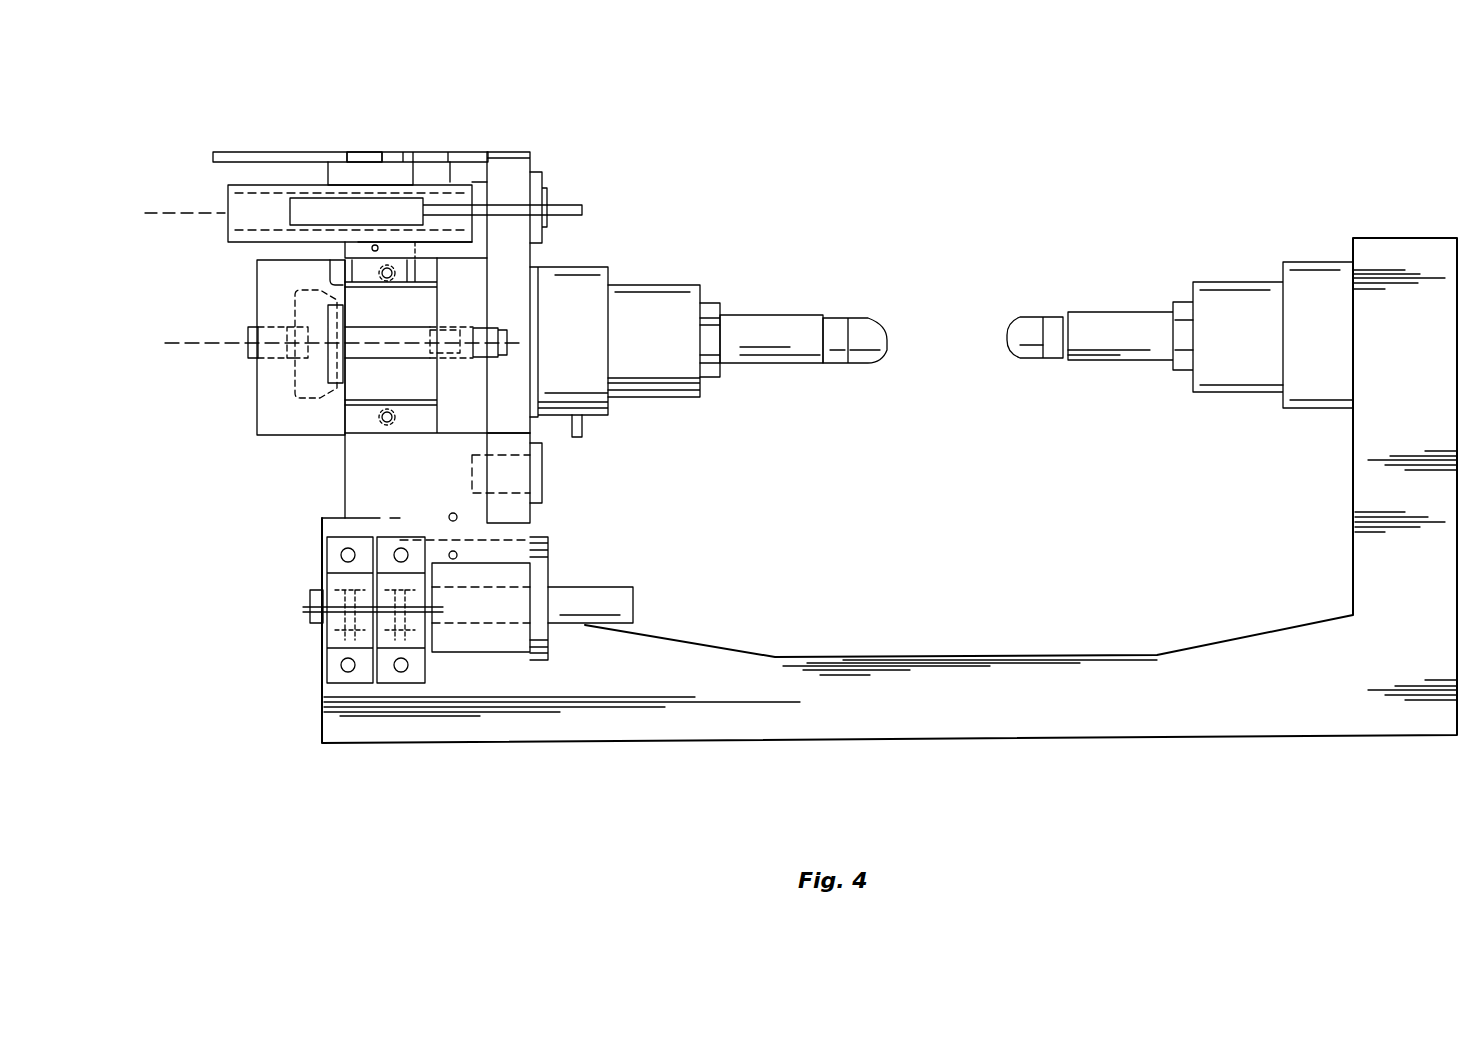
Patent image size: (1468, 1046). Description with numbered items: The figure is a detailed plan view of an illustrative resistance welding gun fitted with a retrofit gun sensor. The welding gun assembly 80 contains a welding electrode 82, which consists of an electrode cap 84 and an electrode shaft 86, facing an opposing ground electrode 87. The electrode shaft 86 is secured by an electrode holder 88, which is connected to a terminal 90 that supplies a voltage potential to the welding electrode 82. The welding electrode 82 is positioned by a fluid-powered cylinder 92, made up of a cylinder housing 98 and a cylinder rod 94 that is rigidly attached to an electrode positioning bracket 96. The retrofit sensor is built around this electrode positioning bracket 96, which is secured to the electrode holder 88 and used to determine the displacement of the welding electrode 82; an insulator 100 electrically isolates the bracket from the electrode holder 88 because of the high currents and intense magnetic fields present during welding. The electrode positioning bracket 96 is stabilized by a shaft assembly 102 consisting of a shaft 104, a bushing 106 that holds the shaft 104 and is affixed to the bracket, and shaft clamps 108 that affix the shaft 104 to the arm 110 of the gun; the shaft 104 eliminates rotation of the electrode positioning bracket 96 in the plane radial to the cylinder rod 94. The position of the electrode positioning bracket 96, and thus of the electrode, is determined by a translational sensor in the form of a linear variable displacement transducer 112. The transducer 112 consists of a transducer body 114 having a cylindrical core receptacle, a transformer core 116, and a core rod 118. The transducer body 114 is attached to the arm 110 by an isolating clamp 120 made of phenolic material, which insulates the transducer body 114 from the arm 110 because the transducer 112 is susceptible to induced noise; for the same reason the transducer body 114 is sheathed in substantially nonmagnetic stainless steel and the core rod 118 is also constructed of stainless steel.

The welding gun assembly 80 is at (248, 455).
The welding electrode 82 is at (805, 290).
The electrode cap 84 is at (843, 375).
The electrode shaft 86 is at (812, 373).
The ground electrode 87 is at (1057, 290).
The electrode holder 88 is at (683, 287).
The terminal 90 is at (592, 425).
The fluid-powered cylinder 92 is at (235, 443).
The cylinder rod 94 is at (368, 360).
The electrode positioning bracket 96 is at (527, 157).
The cylinder housing 98 is at (257, 290).
The insulator 100 is at (547, 267).
The shaft assembly 102 is at (548, 565).
The shaft 104 is at (633, 603).
The bushing 106 is at (542, 538).
The shaft clamps 108 is at (385, 688).
The arm 110 is at (517, 750).
The linear variable displacement transducer 112 is at (278, 152).
The transducer body 114 is at (228, 187).
The transformer core 116 is at (428, 192).
The core rod 118 is at (577, 203).
The isolating clamp 120 is at (363, 152).